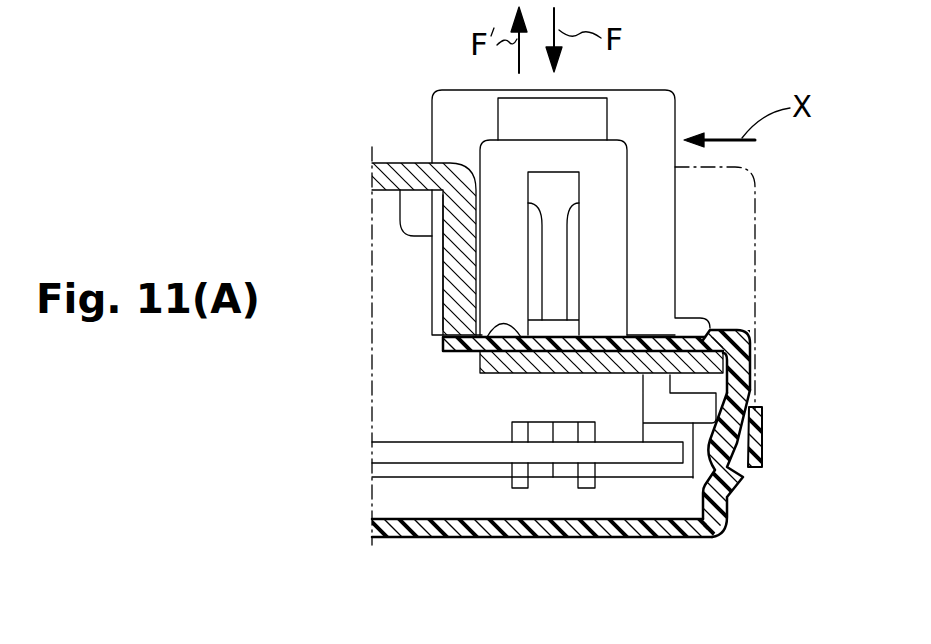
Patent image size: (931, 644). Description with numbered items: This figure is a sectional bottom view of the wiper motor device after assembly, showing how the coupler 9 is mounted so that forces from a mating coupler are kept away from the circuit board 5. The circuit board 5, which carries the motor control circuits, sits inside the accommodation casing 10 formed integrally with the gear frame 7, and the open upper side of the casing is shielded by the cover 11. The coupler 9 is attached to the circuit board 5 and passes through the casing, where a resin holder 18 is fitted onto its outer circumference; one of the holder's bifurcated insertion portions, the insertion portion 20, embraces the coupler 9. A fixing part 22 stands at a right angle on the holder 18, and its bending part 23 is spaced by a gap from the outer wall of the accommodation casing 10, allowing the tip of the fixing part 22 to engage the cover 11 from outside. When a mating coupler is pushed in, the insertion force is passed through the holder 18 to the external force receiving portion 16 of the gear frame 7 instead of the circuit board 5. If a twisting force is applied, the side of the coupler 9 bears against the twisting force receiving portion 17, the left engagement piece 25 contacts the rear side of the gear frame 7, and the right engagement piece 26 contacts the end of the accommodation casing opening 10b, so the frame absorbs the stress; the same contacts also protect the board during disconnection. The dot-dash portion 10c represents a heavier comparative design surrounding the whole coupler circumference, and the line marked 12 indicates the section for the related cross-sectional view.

The circuit board 5 is at (384, 450).
The gear frame 7 is at (393, 160).
The coupler 9 is at (676, 123).
The accommodation casing 10 is at (432, 468).
The accommodation casing opening 10b is at (727, 458).
The portion surrounding the entire circumference of the coupler 10c is at (758, 285).
The cover 11 is at (508, 545).
The section line 12 is at (362, 190).
The external force receiving portion 16 is at (472, 340).
The twisting force receiving portion 17 is at (481, 289).
The holder 18 is at (657, 330).
The insertion portion 20 is at (600, 333).
The fixing part 22 is at (748, 484).
The bending part 23 is at (746, 372).
The left engagement piece 25 is at (415, 222).
The right engagement piece 26 is at (668, 413).